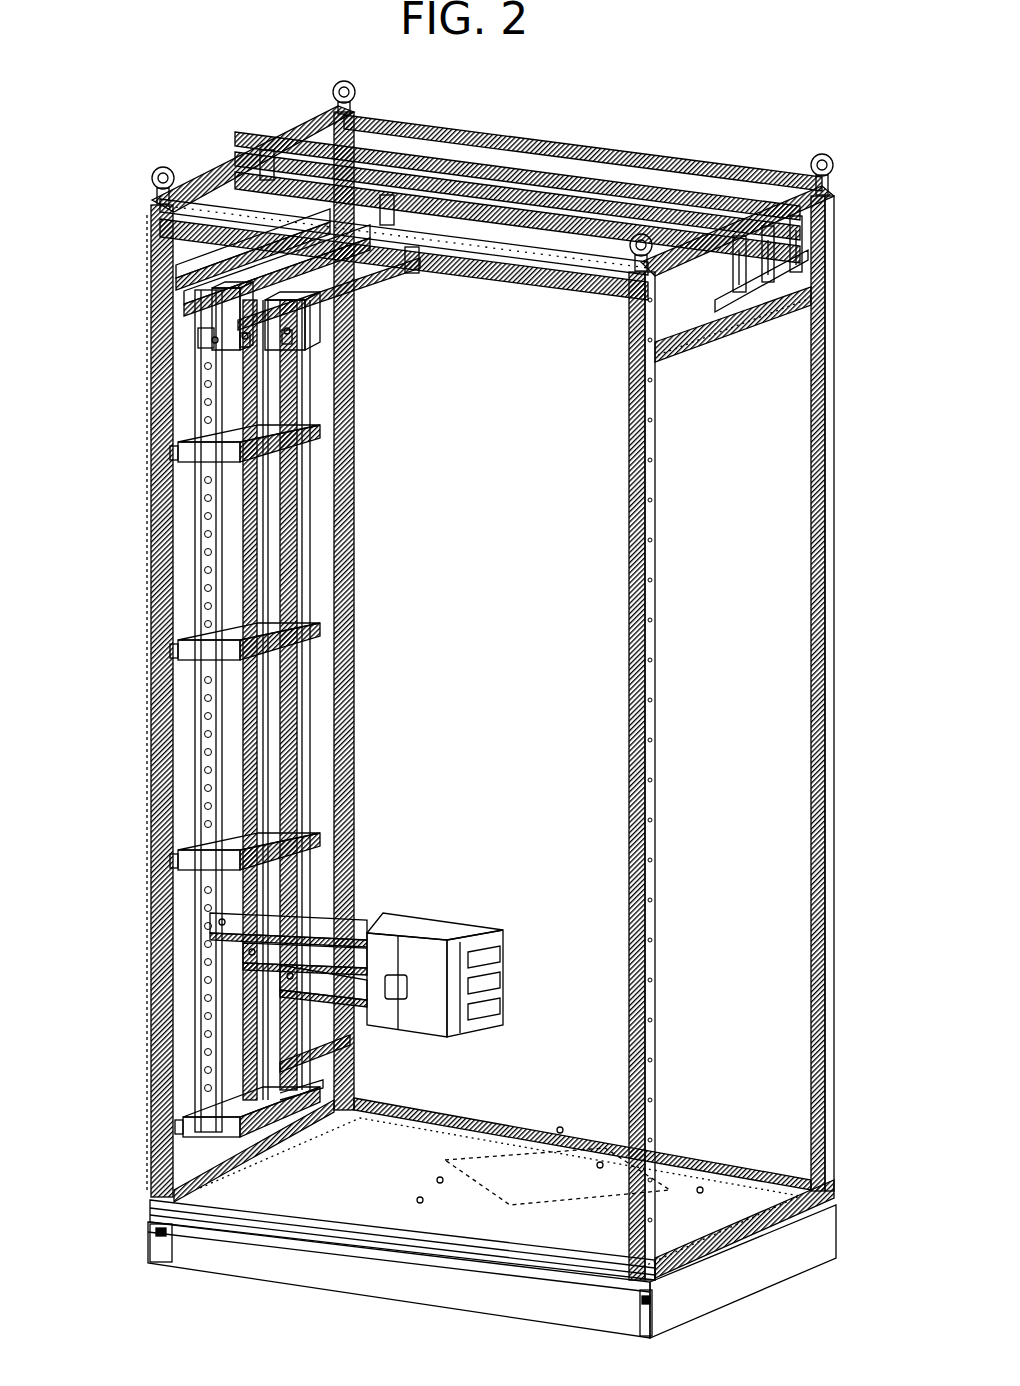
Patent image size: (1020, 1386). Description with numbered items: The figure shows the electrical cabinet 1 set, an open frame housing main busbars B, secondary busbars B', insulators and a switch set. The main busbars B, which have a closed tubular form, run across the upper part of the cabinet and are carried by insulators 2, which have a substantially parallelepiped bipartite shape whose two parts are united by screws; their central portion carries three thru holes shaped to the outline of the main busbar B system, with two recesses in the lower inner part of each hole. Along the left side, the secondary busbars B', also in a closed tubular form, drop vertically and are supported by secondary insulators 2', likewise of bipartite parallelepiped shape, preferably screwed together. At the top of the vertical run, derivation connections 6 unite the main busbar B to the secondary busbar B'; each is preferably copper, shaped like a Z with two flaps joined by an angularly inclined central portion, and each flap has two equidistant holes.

The electrical cabinet 1 is at (120, 110).
The insulators 2 is at (487, 695).
The secondary insulators 2' is at (195, 781).
The main busbars B is at (488, 205).
The secondary busbars B' is at (212, 711).
The derivation connections 6 is at (290, 327).